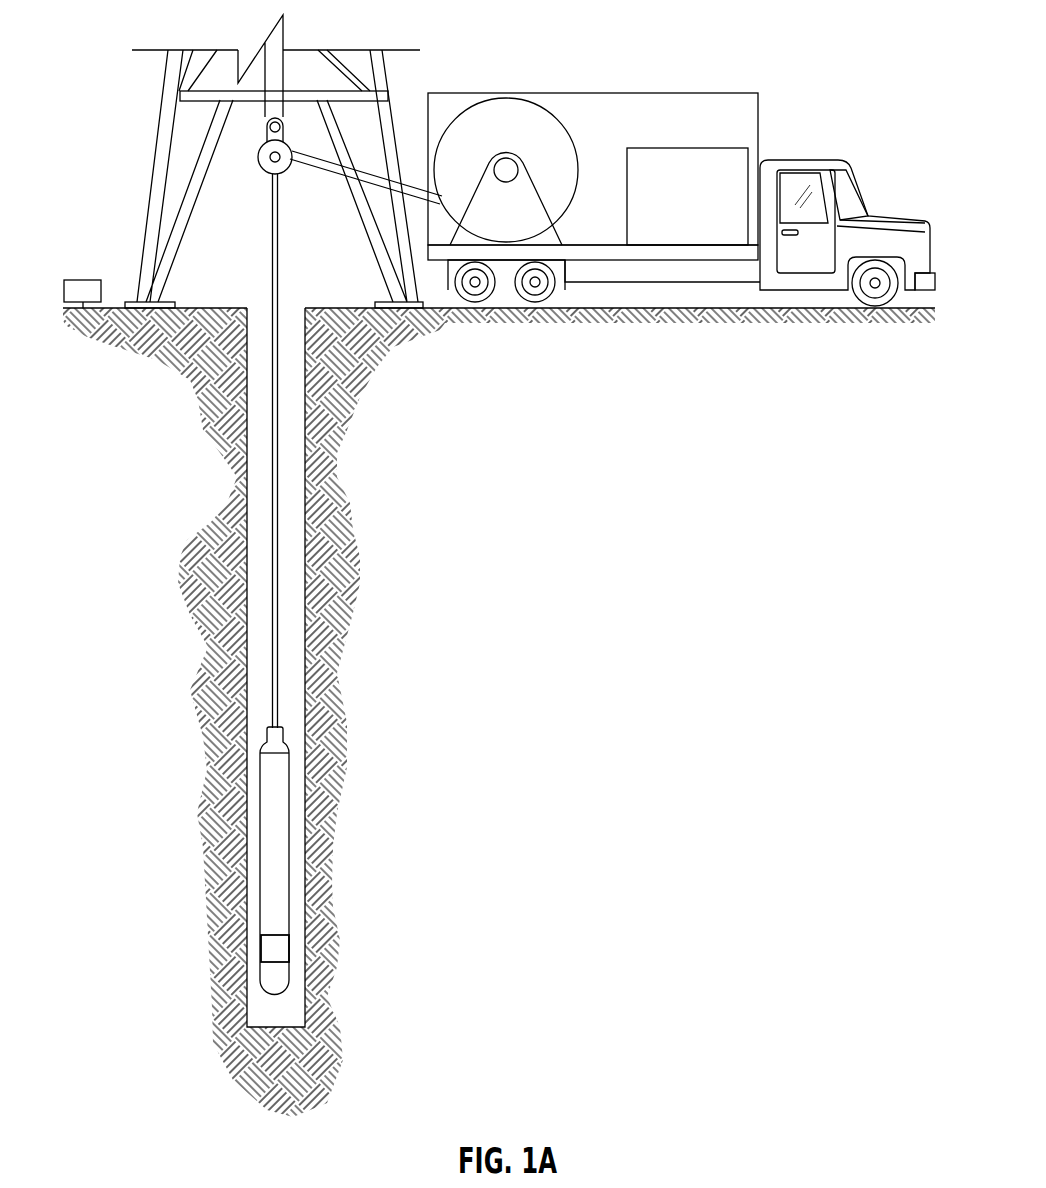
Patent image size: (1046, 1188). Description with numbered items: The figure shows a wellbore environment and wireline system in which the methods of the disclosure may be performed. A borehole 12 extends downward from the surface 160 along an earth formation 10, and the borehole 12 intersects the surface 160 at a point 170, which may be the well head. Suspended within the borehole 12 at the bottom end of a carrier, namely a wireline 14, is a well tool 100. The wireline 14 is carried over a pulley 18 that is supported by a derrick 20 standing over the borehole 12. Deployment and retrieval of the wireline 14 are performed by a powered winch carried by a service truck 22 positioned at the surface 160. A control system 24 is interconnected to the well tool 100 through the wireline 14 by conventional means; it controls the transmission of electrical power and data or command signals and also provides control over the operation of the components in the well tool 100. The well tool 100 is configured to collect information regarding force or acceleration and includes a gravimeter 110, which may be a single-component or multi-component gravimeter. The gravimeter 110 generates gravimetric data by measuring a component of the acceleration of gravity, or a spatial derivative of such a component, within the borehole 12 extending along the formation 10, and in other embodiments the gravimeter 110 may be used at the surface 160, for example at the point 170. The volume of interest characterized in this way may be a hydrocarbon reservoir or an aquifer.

The formation 10 is at (347, 563).
The borehole 12 is at (245, 485).
The wireline 14 is at (280, 503).
The pulley 18 is at (258, 155).
The derrick 20 is at (162, 100).
The service truck 22 is at (690, 148).
The control system 24 is at (625, 93).
The well tool 100 is at (258, 908).
The gravimeter 110 is at (278, 950).
The surface 160 is at (107, 336).
The point 170 is at (70, 280).